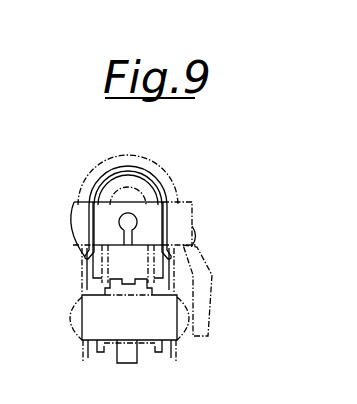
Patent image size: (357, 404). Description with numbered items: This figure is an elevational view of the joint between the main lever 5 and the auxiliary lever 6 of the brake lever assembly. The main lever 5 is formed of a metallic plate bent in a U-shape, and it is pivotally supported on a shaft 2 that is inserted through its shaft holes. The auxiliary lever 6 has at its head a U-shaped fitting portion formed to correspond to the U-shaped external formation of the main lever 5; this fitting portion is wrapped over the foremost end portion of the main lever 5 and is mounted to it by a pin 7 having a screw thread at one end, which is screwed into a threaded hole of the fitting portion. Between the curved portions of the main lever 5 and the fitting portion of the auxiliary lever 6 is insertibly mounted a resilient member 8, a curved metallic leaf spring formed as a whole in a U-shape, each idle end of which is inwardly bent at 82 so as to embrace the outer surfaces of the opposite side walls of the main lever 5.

The shaft 2 is at (167, 316).
The main lever 5 is at (118, 182).
The auxiliary lever 6 is at (150, 164).
The pin 7 is at (188, 222).
The resilient member 8 is at (158, 178).
The inwardly bent end 82 is at (80, 254).